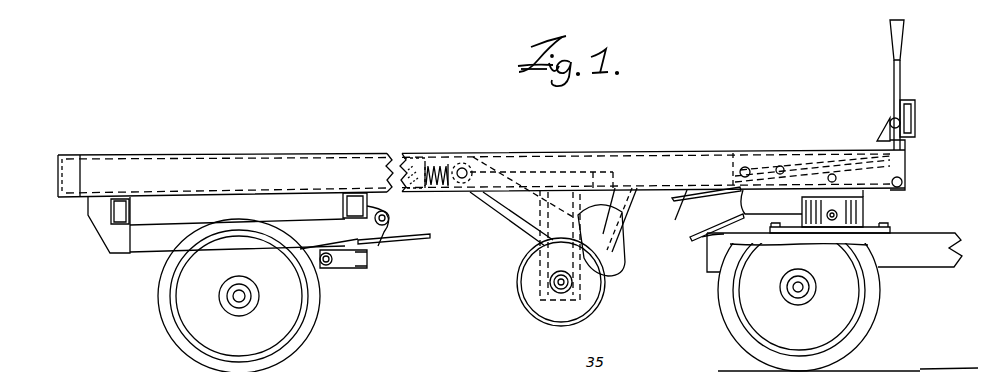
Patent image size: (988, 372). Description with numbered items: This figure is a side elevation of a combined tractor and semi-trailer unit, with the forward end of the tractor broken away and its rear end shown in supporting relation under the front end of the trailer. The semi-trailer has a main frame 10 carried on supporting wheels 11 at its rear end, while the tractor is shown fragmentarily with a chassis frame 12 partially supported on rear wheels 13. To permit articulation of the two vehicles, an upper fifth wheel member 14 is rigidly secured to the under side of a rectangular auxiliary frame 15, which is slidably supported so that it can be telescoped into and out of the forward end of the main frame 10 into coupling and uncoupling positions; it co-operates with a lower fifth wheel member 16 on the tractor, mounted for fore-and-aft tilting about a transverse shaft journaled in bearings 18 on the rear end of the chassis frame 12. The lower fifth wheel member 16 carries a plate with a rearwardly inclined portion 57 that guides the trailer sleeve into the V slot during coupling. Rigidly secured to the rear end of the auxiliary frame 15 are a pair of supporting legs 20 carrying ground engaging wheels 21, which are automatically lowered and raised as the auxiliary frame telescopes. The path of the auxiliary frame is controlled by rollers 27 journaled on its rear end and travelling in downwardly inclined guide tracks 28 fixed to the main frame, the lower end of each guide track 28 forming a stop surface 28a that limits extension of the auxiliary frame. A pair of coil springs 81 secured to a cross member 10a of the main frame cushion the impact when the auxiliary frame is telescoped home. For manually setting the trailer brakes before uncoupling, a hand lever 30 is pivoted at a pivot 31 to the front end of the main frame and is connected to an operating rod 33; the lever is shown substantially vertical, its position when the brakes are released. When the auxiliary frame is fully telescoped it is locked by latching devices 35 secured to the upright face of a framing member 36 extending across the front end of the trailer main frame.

The main frame 10 is at (637, 151).
The cross member 10a is at (415, 153).
The coil springs 81 is at (437, 164).
The rollers 27 is at (477, 161).
The guide tracks 28 is at (507, 199).
The supporting legs 20 is at (548, 223).
The ground engaging wheels 21 is at (530, 270).
The stop surface 28a is at (618, 251).
The supporting wheels 11 is at (185, 292).
The auxiliary frame 15 is at (737, 175).
The upper fifth wheel member 14 is at (731, 196).
The lower fifth wheel member 16 is at (745, 208).
The operating rod 33 is at (681, 202).
The hand lever 30 is at (900, 78).
The latching devices 35 is at (914, 108).
The framing member 36 is at (880, 136).
The pivot 31 is at (903, 183).
The bearings 18 is at (856, 222).
The chassis frame 12 is at (913, 259).
The rearwardly inclined portion 57 is at (704, 238).
The rear wheels 13 is at (845, 298).